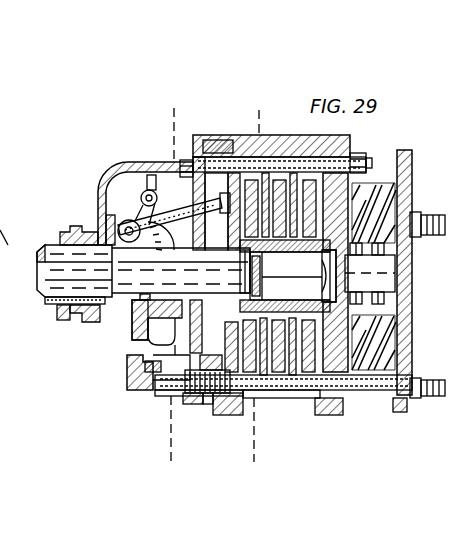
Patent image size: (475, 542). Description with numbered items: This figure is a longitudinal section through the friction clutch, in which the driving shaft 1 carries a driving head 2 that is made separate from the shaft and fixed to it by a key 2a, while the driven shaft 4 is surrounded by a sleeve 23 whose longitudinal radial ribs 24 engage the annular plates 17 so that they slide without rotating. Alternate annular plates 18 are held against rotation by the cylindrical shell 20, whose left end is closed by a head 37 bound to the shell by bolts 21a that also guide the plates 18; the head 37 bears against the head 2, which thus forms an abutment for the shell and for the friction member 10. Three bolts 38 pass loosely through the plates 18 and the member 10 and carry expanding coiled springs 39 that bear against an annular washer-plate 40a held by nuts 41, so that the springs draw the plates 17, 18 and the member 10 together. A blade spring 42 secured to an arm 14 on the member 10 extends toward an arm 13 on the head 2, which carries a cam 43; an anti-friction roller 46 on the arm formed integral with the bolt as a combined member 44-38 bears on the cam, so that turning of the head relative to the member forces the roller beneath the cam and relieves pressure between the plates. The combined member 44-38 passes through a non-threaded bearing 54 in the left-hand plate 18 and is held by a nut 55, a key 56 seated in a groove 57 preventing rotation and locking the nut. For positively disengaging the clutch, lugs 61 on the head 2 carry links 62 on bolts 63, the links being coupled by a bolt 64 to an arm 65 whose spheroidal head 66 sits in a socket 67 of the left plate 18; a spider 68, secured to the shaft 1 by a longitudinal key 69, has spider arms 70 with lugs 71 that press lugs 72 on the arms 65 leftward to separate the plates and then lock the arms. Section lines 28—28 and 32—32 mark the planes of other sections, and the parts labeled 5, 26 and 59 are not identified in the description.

The driving shaft 1 is at (58, 256).
The driving head 2 is at (302, 304).
The key 2a is at (140, 304).
The driven shaft 4 is at (319, 276).
The clutch disc pack 5 is at (251, 398).
The friction member 10 is at (309, 338).
The arm 13 is at (155, 345).
The arm 14 is at (197, 381).
The annular plates 17 is at (307, 392).
The annular plates 18 is at (232, 147).
The cylindrical shell 20 is at (268, 141).
The bolts 21a is at (366, 160).
The sleeve 23 is at (305, 302).
The longitudinal radial ribs 24 is at (304, 248).
The bearing 26 is at (83, 327).
The section line 28 is at (167, 283).
The section line 32 is at (255, 283).
The head 37 is at (246, 263).
The bolts 38 is at (433, 221).
The expanding coiled spring 39 is at (363, 200).
The annular washer-plate 40a is at (411, 176).
The nut 41 is at (411, 212).
The blade spring 42 is at (372, 262).
The cam 43 is at (126, 368).
The combined member 44-38 is at (375, 428).
The anti-friction roller 46 is at (169, 360).
The non-threaded bearing 54 is at (207, 364).
The nut 55 is at (208, 404).
The key 56 is at (14, 224).
The groove 57 is at (196, 398).
The retainer 59 is at (225, 416).
The lugs 61 is at (100, 224).
The link 62 is at (146, 227).
The bolt or shaft 63 is at (120, 225).
The bolt or shaft 64 is at (141, 198).
The arm 65 is at (190, 208).
The spheroidal head 66 is at (232, 210).
The socket 67 is at (226, 190).
The spider 68 is at (62, 320).
The longitudinal key 69 is at (53, 306).
The spider arm 70 is at (113, 168).
The lug 71 is at (176, 177).
The lug 72 is at (147, 180).